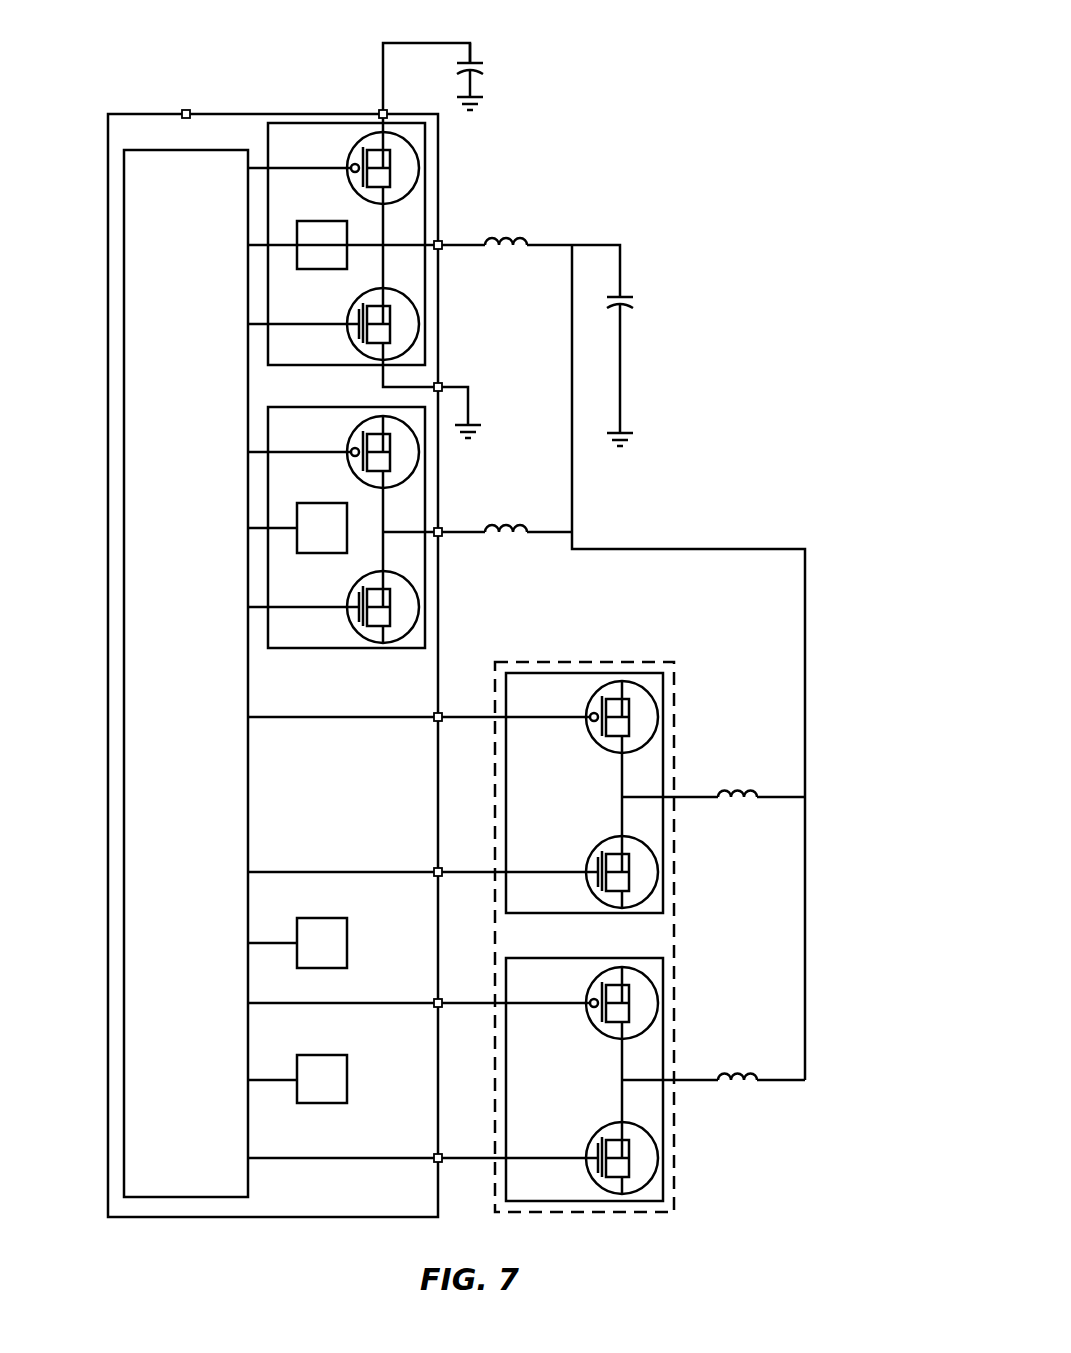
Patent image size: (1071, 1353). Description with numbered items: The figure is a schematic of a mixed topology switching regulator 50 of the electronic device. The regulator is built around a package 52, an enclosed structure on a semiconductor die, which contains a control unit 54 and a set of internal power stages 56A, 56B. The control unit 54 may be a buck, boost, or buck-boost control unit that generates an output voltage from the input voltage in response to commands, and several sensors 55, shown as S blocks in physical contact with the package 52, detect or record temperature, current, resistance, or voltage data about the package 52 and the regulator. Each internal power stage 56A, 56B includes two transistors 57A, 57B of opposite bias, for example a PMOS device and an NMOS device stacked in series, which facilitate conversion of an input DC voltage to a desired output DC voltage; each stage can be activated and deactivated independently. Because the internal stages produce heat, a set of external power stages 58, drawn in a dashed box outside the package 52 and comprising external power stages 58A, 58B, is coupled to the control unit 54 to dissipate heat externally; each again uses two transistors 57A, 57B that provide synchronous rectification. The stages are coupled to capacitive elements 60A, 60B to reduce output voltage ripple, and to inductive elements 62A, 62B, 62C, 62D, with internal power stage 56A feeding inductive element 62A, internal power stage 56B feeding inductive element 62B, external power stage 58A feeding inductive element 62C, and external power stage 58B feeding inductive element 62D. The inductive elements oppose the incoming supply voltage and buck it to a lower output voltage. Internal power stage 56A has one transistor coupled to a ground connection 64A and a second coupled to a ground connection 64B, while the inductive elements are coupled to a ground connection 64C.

The mixed topology switching regulator 50 is at (681, 51).
The package 52 is at (108, 668).
The control unit 54 is at (124, 615).
The sensor 55 is at (323, 221).
The internal power stage 56A is at (426, 205).
The internal power stage 56B is at (426, 454).
The transistor 57A is at (416, 151).
The transistor 57B is at (416, 306).
The external power stages 58 is at (674, 920).
The external power stage 58A is at (664, 758).
The external power stage 58B is at (664, 1042).
The capacitive element 60A is at (476, 62).
The capacitive element 60B is at (626, 296).
The inductive element 62A is at (509, 245).
The inductive element 62B is at (509, 532).
The inductive element 62C is at (742, 797).
The inductive element 62D is at (742, 1080).
The ground connection 64A is at (481, 99).
The ground connection 64B is at (481, 427).
The ground connection 64C is at (632, 433).